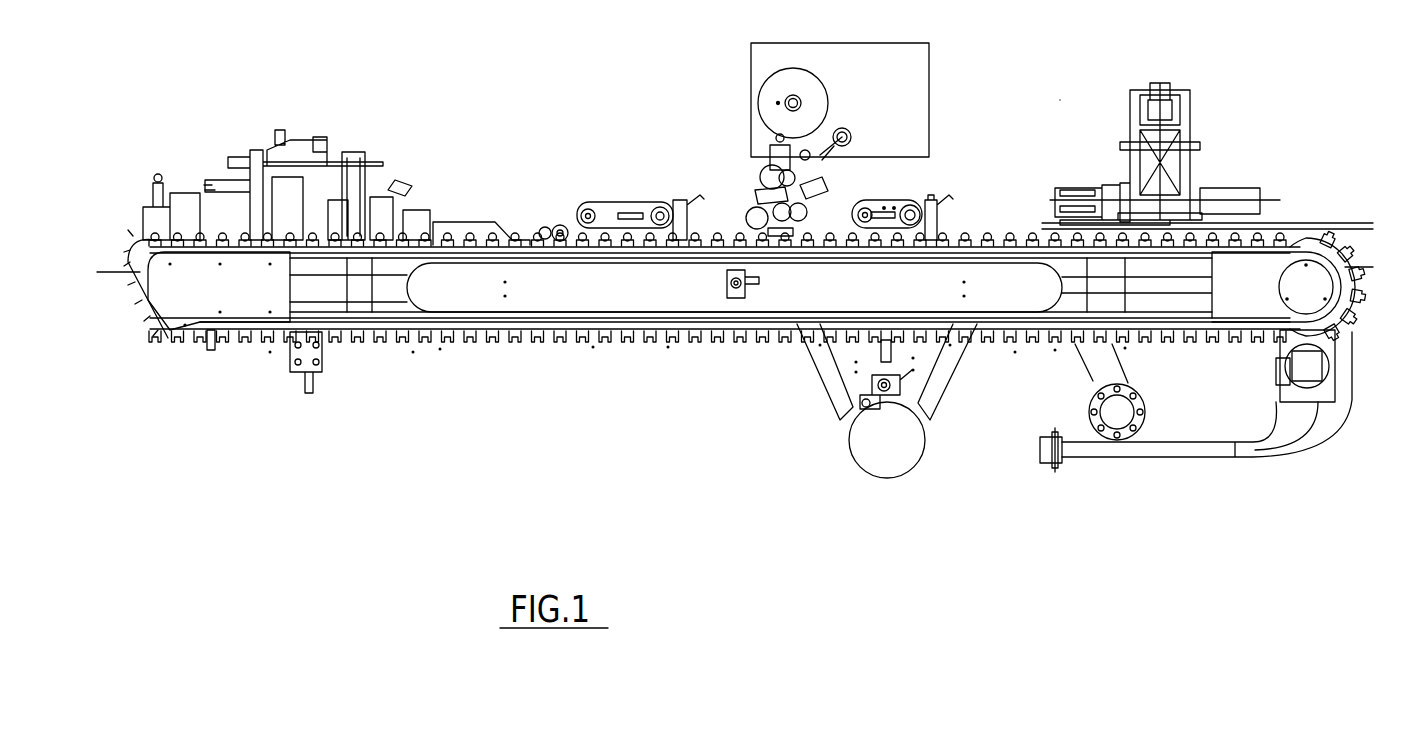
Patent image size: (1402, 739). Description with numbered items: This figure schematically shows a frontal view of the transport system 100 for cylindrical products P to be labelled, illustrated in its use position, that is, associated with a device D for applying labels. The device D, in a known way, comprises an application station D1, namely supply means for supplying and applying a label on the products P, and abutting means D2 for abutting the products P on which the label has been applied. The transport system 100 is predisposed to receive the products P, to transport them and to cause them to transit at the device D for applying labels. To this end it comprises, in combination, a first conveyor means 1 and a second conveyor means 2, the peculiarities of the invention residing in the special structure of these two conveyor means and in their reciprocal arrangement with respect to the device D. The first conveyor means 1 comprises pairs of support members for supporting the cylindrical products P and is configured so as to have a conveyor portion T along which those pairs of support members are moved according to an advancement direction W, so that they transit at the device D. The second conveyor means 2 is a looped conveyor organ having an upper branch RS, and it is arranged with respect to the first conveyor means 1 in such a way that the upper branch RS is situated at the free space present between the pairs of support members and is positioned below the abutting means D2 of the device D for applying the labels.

The transport system 100 is at (735, 313).
The first conveyor means 1 is at (452, 245).
The second conveyor means 2 is at (824, 373).
The conveyor portion T is at (705, 248).
The advancement direction W is at (636, 250).
The cylindrical products P is at (713, 225).
The device for applying labels D is at (788, 125).
The application station D1 is at (794, 197).
The abutting means D2 is at (902, 210).
The upper branch RS is at (947, 237).